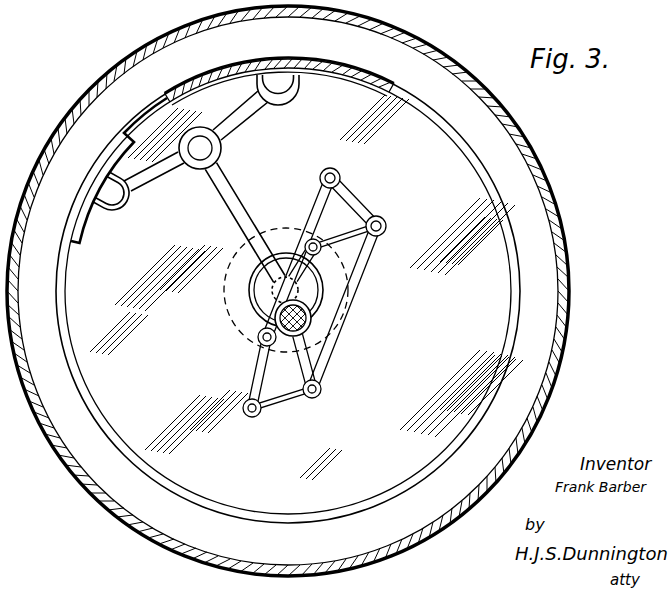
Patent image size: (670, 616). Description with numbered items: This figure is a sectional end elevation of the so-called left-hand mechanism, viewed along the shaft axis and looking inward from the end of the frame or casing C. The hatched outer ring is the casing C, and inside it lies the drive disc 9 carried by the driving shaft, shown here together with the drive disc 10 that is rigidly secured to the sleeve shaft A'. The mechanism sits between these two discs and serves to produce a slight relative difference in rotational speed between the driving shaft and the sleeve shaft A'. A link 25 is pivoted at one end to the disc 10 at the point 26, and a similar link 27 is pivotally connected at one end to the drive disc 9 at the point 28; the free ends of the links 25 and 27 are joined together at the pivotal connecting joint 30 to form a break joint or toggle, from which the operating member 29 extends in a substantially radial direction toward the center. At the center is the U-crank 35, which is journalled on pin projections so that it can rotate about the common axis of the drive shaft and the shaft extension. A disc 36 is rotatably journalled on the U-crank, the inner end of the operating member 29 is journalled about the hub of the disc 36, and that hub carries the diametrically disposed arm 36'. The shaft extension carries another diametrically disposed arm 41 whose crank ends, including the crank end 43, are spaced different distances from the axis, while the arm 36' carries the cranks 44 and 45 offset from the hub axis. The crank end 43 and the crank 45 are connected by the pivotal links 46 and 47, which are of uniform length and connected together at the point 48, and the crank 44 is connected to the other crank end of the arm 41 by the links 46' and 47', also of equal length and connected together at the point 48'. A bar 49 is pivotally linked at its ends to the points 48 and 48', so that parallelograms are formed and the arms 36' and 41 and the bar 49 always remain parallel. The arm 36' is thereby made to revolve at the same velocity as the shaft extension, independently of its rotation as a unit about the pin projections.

The casing C is at (517, 128).
The drive disc 9 is at (200, 82).
The drive disc 10 is at (145, 107).
The link 25 is at (148, 178).
The pivot point 26 is at (108, 204).
The link 27 is at (245, 117).
The pivot point 28 is at (291, 86).
The operating member 29 is at (233, 213).
The pivotal connecting joint 30 is at (199, 146).
The U-crank 35 is at (312, 317).
The disc 36 is at (242, 335).
The arm 36' is at (247, 372).
The arm 41 is at (306, 222).
The crank end 43 is at (332, 176).
The crank 44 is at (246, 415).
The crank 45 is at (321, 238).
The pivotal link 46 is at (366, 202).
The link 46' is at (331, 362).
The pivotal link 47 is at (360, 243).
The link 47' is at (282, 411).
The connection point 48 is at (390, 226).
The connection point 48' is at (324, 396).
The bar 49 is at (362, 270).
The sleeve shaft A' is at (266, 290).